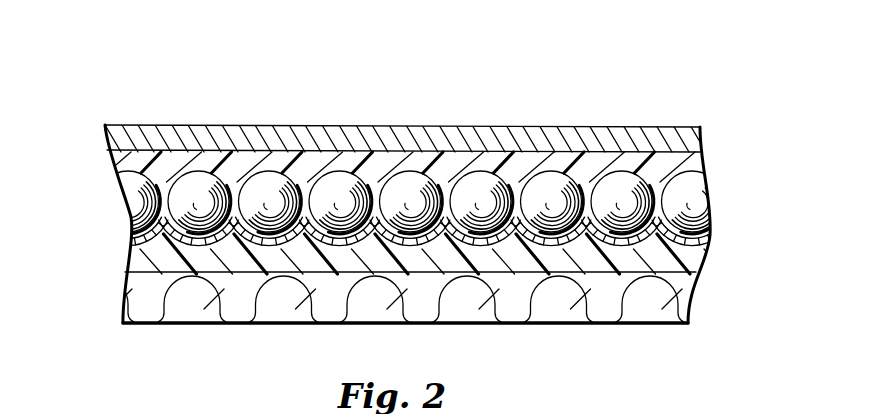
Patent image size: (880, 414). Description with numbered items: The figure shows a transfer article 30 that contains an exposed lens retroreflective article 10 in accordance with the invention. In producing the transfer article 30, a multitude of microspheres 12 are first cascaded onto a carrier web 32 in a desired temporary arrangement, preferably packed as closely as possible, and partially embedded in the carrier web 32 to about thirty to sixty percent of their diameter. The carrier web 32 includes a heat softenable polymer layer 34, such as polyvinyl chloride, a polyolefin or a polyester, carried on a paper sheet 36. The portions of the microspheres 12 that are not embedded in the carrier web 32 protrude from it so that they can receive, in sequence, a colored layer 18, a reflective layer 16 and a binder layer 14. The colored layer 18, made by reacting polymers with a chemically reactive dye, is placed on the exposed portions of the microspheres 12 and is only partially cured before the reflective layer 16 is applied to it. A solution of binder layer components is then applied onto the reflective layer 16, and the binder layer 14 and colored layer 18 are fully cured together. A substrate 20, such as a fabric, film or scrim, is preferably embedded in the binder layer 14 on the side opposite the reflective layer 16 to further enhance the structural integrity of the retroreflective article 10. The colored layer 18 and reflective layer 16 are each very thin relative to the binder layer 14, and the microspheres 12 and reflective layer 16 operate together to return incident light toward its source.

The retroreflective article 10 is at (757, 327).
The microspheres 12 is at (337, 187).
The binder layer 14 is at (142, 255).
The reflective layer 16 is at (688, 243).
The colored layer 18 is at (135, 240).
The substrate 20 is at (638, 314).
The transfer article 30 is at (643, 113).
The carrier web 32 is at (97, 125).
The heat softenable polymer layer 34 is at (686, 163).
The paper sheet 36 is at (170, 125).